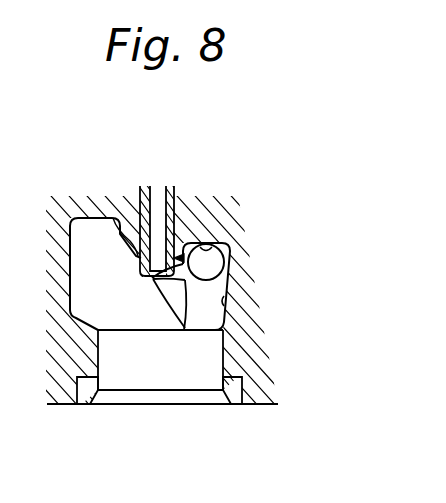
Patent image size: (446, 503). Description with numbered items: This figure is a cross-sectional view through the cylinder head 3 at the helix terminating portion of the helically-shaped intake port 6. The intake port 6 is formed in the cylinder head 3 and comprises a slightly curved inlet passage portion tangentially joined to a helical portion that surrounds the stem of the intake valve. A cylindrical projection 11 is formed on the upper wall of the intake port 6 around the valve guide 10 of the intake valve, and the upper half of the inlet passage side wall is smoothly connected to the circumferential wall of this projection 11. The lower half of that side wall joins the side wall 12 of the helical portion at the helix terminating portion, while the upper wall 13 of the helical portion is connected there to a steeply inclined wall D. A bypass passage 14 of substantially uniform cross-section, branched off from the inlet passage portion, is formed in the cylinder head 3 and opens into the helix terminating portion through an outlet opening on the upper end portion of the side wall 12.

The cylinder head 3 is at (240, 248).
The helically-shaped intake port 6 is at (109, 287).
The valve guide 10 is at (176, 210).
The cylindrical projection 11 is at (113, 218).
The side wall of the helical portion 12 is at (225, 305).
The upper wall of the helical portion 13 is at (223, 230).
The bypass passage 14 is at (208, 268).
The steeply inclined wall D is at (182, 290).